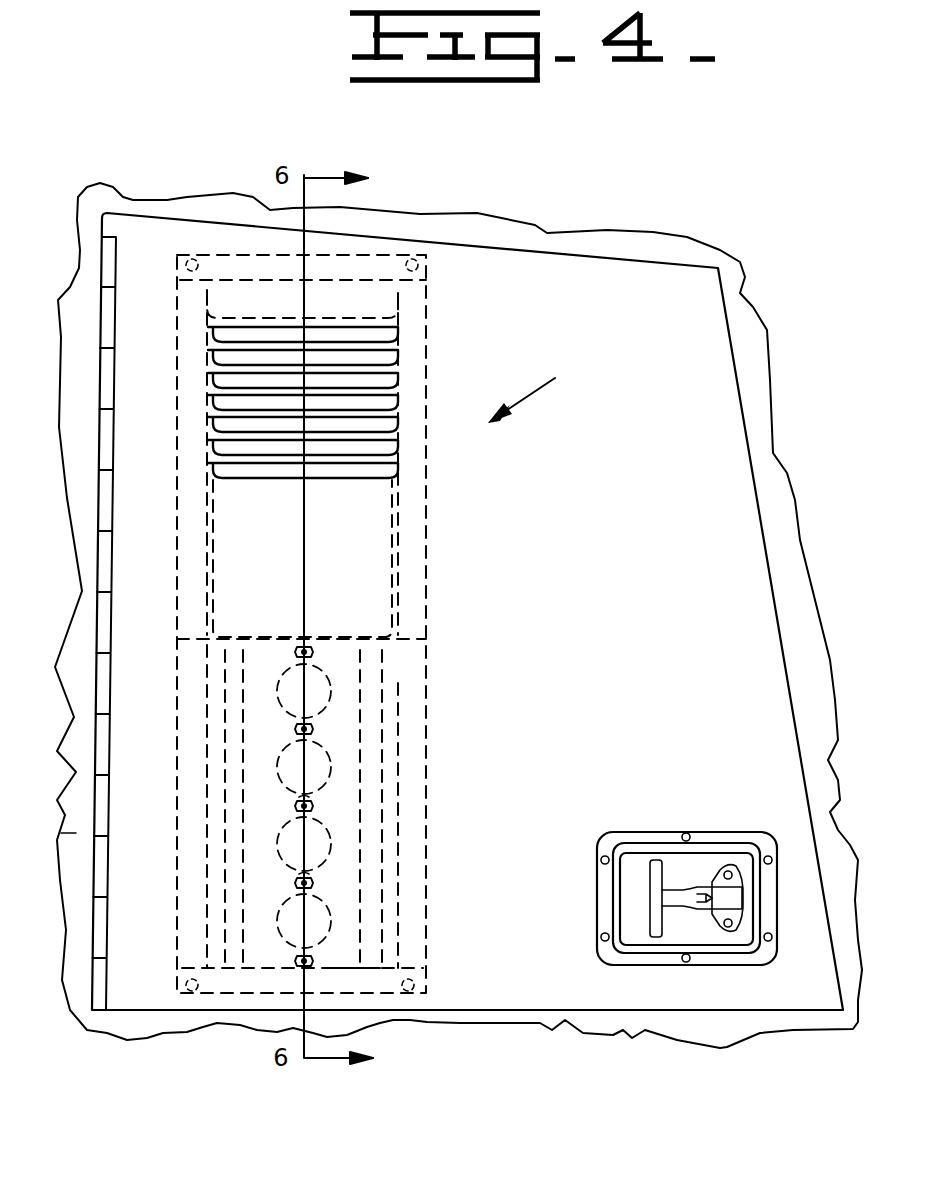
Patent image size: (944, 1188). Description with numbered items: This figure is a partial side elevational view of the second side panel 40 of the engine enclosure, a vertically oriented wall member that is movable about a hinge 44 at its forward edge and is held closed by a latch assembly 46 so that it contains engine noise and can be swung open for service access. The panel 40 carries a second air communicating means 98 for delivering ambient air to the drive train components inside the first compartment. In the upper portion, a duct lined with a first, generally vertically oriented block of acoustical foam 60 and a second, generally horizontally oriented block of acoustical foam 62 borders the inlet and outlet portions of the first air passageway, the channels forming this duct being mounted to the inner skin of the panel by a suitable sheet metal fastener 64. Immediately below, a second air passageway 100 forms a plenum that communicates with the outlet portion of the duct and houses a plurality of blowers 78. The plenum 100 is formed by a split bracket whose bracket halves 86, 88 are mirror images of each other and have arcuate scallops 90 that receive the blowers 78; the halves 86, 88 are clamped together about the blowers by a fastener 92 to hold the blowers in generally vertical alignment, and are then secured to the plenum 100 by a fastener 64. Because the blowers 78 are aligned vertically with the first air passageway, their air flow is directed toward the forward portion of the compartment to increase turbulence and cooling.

The second side panel 40 is at (638, 467).
The hinge 44 is at (100, 270).
The latch assembly 46 is at (725, 832).
The first block of acoustical foam 60 is at (400, 528).
The second block of acoustical foam 62 is at (207, 277).
The fastener 64 is at (427, 205).
The blowers 78 is at (323, 703).
The bracket half 86 is at (265, 970).
The bracket half 88 is at (360, 970).
The arcuate scallops 90 is at (296, 740).
The fastener 92 is at (296, 880).
The second air communicating means 98 is at (541, 394).
The second air passageway 100 is at (400, 692).